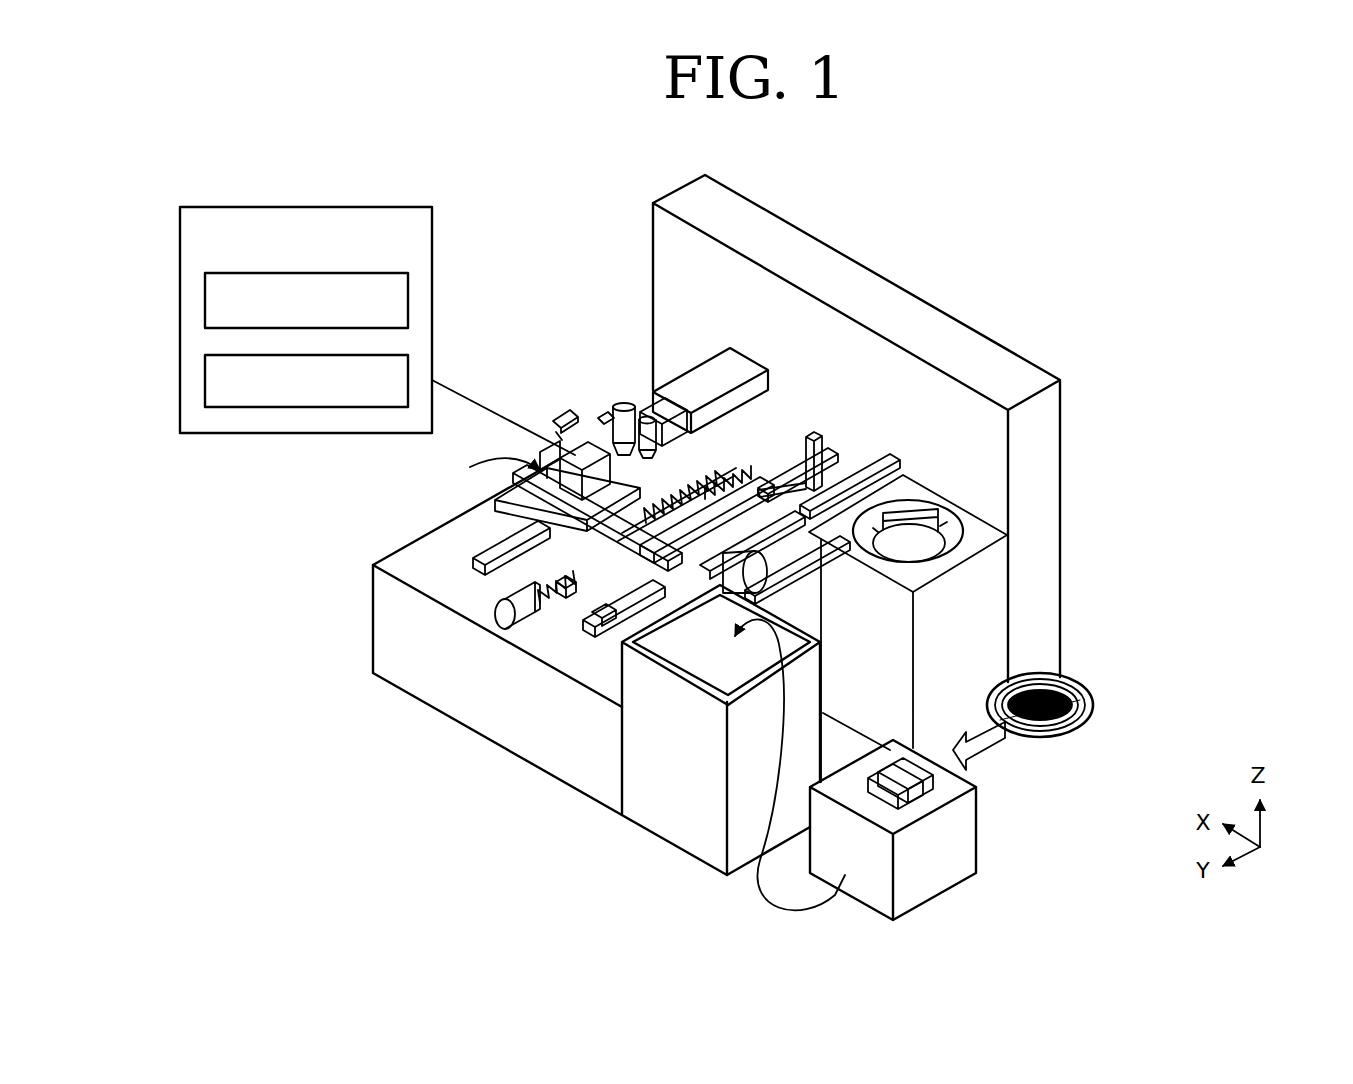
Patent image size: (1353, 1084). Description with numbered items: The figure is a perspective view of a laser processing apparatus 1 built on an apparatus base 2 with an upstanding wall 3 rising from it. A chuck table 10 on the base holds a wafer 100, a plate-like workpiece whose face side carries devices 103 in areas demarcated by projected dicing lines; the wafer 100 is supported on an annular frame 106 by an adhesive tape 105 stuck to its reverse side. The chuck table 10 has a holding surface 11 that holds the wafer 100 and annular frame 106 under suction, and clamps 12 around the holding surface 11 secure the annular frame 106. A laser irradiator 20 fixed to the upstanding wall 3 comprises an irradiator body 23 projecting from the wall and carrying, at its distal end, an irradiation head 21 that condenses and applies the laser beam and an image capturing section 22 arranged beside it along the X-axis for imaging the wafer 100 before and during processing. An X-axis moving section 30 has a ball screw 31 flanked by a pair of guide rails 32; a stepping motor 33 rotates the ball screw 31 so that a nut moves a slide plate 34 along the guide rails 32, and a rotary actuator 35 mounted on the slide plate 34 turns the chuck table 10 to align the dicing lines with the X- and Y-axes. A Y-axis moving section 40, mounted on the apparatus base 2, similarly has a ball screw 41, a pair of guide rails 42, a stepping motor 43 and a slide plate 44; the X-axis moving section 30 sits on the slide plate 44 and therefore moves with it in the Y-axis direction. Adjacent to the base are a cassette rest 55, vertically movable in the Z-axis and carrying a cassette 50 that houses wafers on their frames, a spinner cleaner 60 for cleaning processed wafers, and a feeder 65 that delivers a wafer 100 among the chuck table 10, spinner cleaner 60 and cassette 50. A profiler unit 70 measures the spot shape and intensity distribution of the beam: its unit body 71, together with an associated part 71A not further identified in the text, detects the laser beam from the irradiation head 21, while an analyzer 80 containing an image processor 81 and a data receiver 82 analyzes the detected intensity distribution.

The laser processing apparatus 1 is at (1078, 158).
The apparatus base 2 is at (383, 606).
The upstanding wall 3 is at (1015, 372).
The chuck table 10 is at (507, 309).
The holding surface 11 is at (607, 417).
The clamps 12 is at (556, 423).
The laser irradiator 20 is at (630, 245).
The irradiation head 21 is at (624, 403).
The image capturing section 22 is at (648, 416).
The irradiator body 23 is at (693, 377).
The X-axis moving section 30 is at (725, 540).
The ball screw 31 is at (695, 482).
The guide rails 32 is at (762, 487).
The stepping motor 33 is at (850, 588).
The slide plate 34 is at (505, 497).
The rotary actuator 35 is at (495, 495).
The Y-axis moving section 40 is at (563, 607).
The ball screw 41 is at (505, 592).
The guide rails 42 is at (478, 575).
The stepping motor 43 is at (540, 590).
The slide plate 44 is at (590, 618).
The cassette 50 is at (940, 878).
The cassette rest 55 is at (712, 660).
The spinner cleaner 60 is at (905, 503).
The feeder 65 is at (838, 467).
The profiler unit 70 is at (500, 245).
The unit body 71 is at (540, 462).
The lens 71A is at (495, 503).
The analyzer 80 is at (371, 207).
The image processor 81 is at (205, 300).
The data receiver 82 is at (205, 380).
The wafer 100 is at (1070, 677).
The devices 103 is at (1067, 737).
The adhesive tape 105 is at (1088, 708).
The annular frame 106 is at (1088, 688).